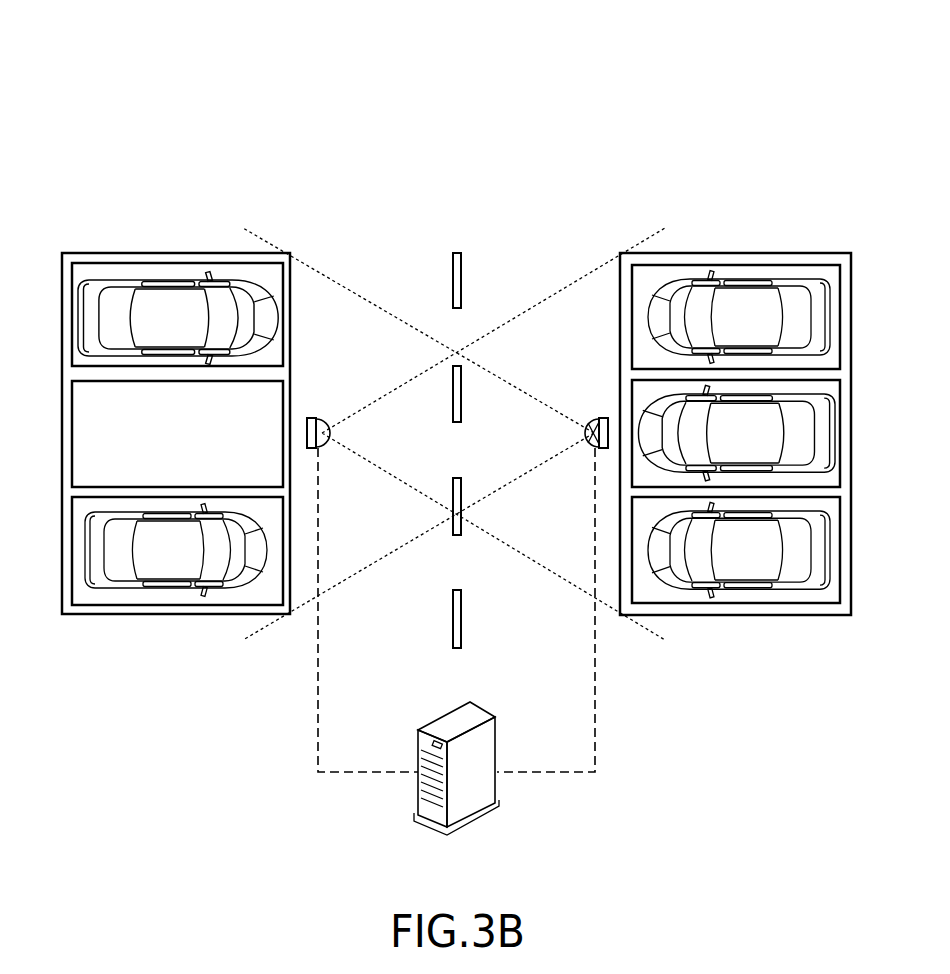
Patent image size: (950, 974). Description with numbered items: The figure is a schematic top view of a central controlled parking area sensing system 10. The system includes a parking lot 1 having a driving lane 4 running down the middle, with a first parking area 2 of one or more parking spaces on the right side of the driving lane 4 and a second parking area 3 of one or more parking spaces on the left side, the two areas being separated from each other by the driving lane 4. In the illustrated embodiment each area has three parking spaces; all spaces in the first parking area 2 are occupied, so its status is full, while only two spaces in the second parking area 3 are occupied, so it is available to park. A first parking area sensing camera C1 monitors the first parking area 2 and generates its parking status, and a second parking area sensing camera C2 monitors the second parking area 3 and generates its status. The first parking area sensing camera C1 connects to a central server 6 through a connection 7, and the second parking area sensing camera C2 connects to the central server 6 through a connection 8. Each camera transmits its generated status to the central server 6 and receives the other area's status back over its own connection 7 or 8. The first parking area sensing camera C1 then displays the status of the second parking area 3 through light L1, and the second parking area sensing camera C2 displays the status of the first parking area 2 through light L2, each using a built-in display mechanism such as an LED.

The parking area sensing system 10 is at (55, 112).
The parking lot 1 is at (122, 694).
The first parking area 2 is at (722, 225).
The second parking area 3 is at (163, 226).
The driving lane 4 is at (426, 223).
The central server 6 is at (470, 795).
The connection 7 is at (362, 775).
The connection 8 is at (552, 775).
The first parking area sensing camera C1 is at (312, 416).
The second parking area sensing camera C2 is at (603, 416).
The light L1 is at (327, 420).
The light L2 is at (589, 420).